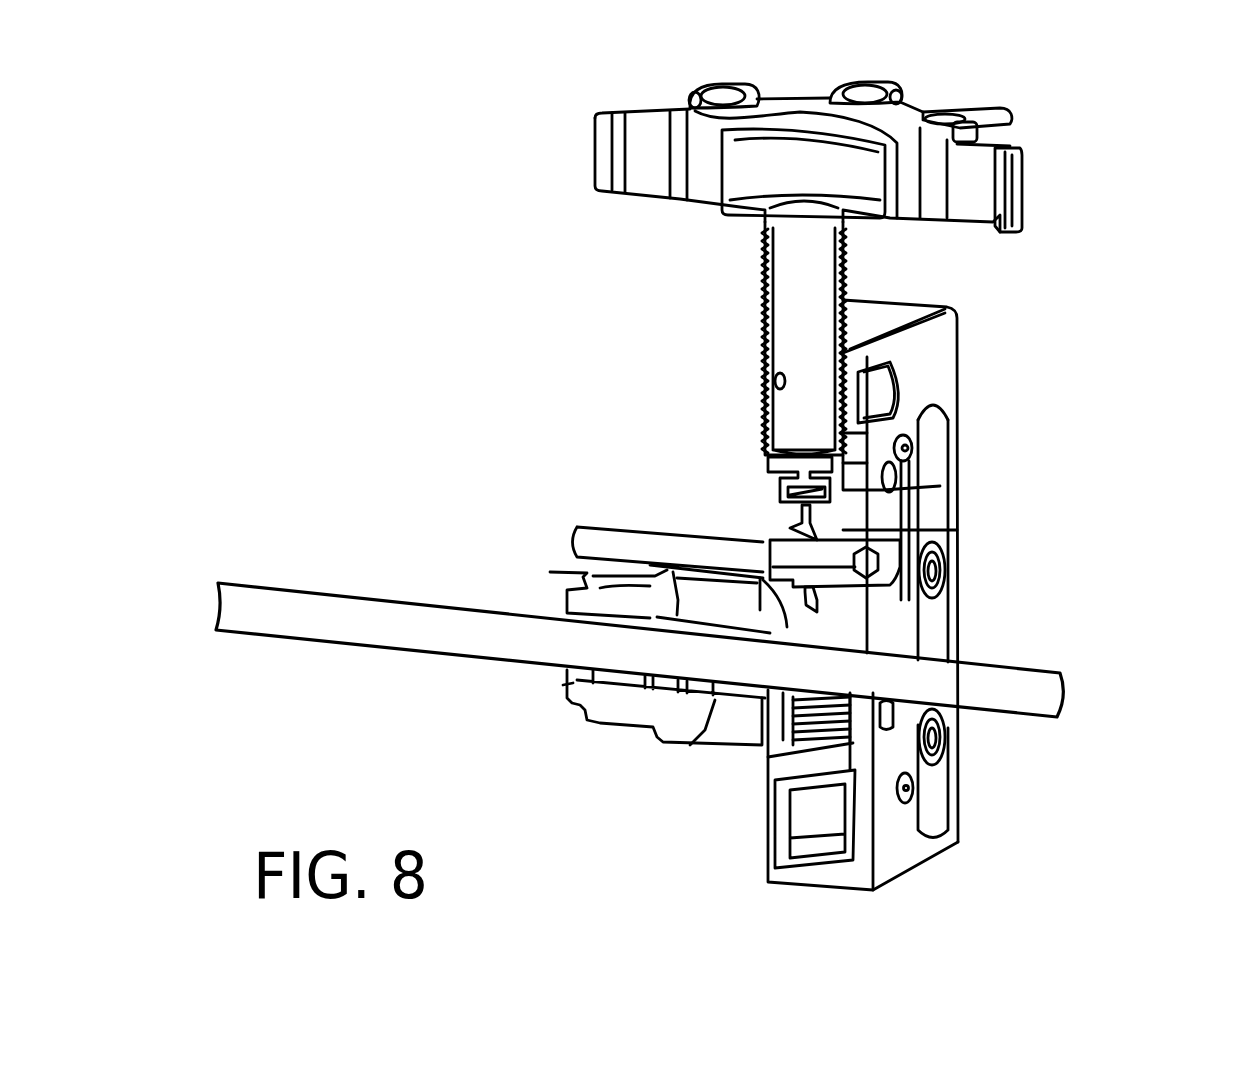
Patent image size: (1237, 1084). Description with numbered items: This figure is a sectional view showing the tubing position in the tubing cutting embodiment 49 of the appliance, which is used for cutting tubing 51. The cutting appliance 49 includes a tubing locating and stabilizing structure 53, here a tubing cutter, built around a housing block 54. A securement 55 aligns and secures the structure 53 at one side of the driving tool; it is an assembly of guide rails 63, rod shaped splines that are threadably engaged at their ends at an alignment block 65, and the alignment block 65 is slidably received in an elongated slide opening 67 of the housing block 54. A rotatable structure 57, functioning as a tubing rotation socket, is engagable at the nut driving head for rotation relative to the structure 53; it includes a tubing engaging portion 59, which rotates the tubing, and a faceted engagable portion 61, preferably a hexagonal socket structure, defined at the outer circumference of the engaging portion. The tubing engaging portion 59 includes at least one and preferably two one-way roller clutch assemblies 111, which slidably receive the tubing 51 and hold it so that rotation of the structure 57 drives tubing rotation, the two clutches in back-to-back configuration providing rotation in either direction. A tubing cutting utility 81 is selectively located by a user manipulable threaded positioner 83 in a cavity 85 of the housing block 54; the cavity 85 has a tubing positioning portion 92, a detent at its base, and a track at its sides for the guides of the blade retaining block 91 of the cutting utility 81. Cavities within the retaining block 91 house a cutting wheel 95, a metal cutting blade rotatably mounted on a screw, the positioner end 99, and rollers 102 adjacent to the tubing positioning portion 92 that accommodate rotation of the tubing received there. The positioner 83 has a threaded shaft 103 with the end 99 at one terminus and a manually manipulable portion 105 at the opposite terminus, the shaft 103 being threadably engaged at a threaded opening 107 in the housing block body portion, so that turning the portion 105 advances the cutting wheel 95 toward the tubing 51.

The tubing cutting embodiment 49 is at (1070, 432).
The tubing 51 is at (268, 613).
The tubing locating and stabilizing structure 53 is at (949, 342).
The housing block 54 is at (962, 832).
The securement 55 is at (937, 607).
The rotatable structure 57 is at (605, 592).
The tubing engaging portion 59 is at (680, 613).
The faceted engagable portion 61 is at (603, 732).
The guide rails 63 is at (703, 545).
The alignment block 65 is at (937, 645).
The elongated slide opening 67 is at (930, 803).
The tubing cutting utility 81 is at (885, 518).
The threaded positioner 83 is at (763, 262).
The cavity 85 is at (935, 632).
The blade retaining block 91 is at (768, 498).
The tubing positioning portion 92 is at (875, 750).
The cutting wheel 95 is at (885, 532).
The positioner end 99 is at (895, 470).
The rollers 102 is at (825, 712).
The threaded shaft 103 is at (765, 322).
The manually manipulable portion 105 is at (1015, 127).
The threaded opening 107 is at (765, 375).
The one-way roller clutch assembly 111 is at (563, 685).